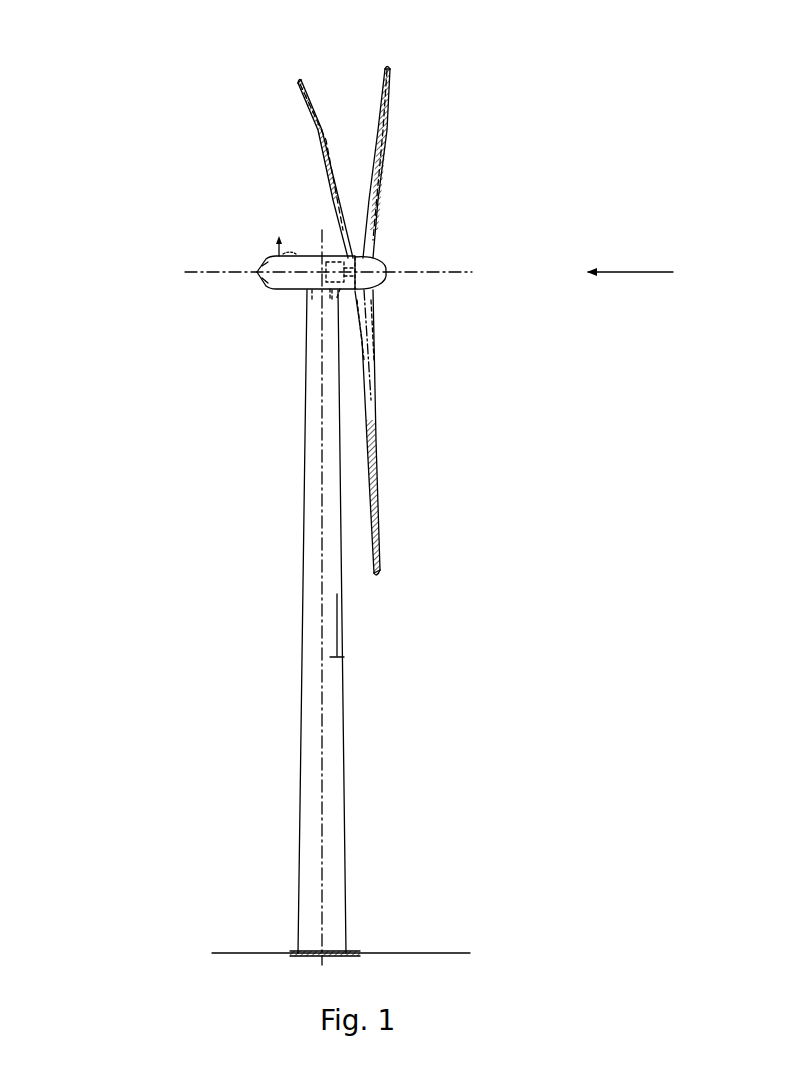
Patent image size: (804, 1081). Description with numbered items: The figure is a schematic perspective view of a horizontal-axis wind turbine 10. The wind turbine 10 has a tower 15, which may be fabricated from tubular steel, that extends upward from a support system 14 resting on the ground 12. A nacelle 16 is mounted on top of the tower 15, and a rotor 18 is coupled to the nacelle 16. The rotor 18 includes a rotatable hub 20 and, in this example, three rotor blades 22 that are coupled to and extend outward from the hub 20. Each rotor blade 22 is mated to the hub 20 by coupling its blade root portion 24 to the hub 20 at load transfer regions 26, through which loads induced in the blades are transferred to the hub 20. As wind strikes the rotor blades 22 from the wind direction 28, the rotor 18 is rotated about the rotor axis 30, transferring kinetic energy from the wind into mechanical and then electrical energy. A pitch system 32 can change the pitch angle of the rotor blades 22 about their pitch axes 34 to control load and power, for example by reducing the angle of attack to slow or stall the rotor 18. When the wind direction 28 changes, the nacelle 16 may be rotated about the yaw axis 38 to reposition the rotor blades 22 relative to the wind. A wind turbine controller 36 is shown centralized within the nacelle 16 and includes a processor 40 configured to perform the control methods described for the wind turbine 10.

The wind turbine 10 is at (113, 86).
The ground 12 is at (232, 952).
The support system 14 is at (290, 951).
The tower 15 is at (320, 594).
The nacelle 16 is at (283, 291).
The rotor 18 is at (398, 188).
The rotatable hub 20 is at (383, 268).
The rotor blade 22 is at (320, 139).
The blade root portion 24 is at (375, 362).
The load transfer regions 26 is at (372, 292).
The wind direction 28 is at (642, 272).
The rotor axis 30 is at (440, 275).
The pitch system 32 is at (372, 310).
The pitch axes 34 is at (299, 82).
The wind turbine controller 36 is at (316, 300).
The yaw axis 38 is at (345, 657).
The processor 40 is at (335, 243).